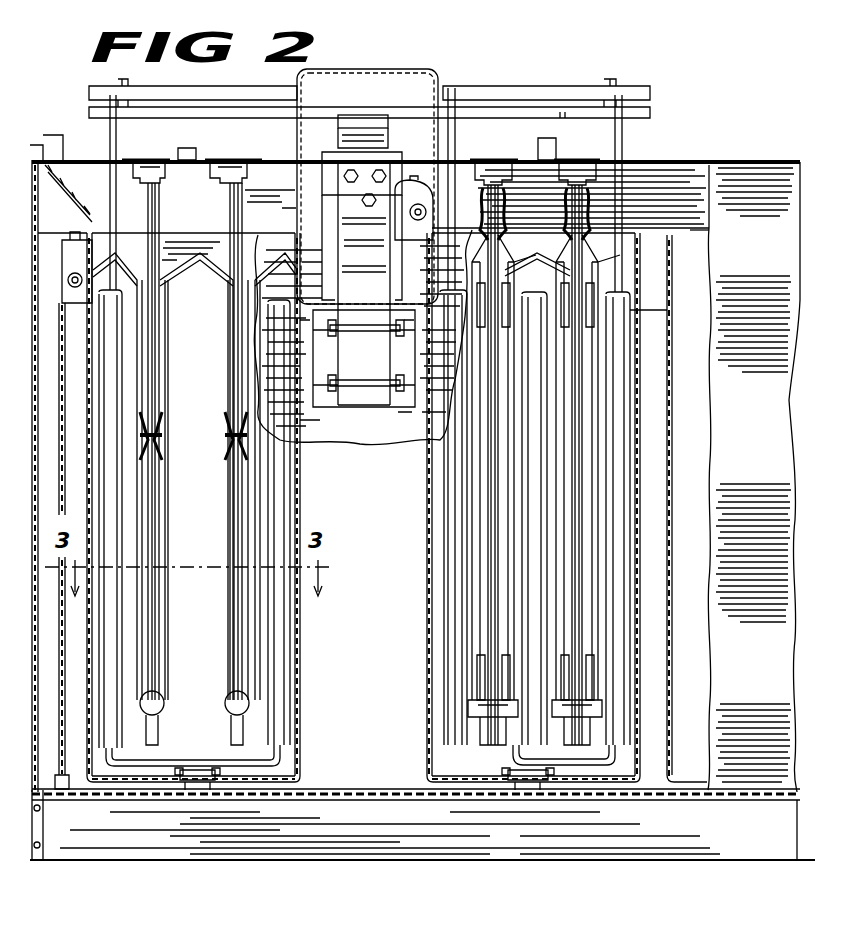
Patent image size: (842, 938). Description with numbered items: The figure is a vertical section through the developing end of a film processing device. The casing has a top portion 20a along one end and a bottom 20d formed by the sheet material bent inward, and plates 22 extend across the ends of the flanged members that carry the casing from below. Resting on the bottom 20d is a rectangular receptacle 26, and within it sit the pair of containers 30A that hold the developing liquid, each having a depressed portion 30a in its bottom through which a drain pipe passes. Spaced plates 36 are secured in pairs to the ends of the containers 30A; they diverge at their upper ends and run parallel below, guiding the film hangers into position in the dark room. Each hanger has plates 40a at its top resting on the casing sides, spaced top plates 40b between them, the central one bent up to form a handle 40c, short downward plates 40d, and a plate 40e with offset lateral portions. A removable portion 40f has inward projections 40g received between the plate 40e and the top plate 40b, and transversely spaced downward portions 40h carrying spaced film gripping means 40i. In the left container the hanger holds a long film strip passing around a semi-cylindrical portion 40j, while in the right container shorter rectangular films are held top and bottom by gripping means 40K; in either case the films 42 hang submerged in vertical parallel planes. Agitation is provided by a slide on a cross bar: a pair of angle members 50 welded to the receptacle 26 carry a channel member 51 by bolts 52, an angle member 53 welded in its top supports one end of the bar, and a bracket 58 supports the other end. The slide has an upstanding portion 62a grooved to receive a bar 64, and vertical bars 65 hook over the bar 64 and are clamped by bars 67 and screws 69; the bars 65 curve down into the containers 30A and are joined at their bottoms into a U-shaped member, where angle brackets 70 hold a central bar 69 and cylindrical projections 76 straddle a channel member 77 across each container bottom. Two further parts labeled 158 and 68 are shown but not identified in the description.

The housing 158 is at (368, 70).
The screws 69 is at (130, 82).
The bars 67 is at (226, 96).
The center post 68 is at (462, 96).
The upstanding portion 62a is at (372, 122).
The angle member 53 is at (388, 160).
The vertically extending bars 65 is at (105, 162).
The bar 64 is at (570, 118).
The plate 40e is at (148, 162).
The inwardly projecting portions 40g is at (200, 156).
The top plates 40b is at (118, 160).
The handle 40c is at (538, 146).
The short plates 40d is at (610, 172).
The plates 40a is at (214, 168).
The removable portion 40f is at (148, 206).
The downwardly extending portions 40h is at (242, 348).
The film gripping means 40i is at (294, 446).
The semi-cylindrical portion 40j is at (270, 722).
The film gripping means 40K is at (470, 672).
The top portion 20a is at (74, 196).
The bottom 20d is at (383, 810).
The plates 22 is at (32, 825).
The receptacle 26 is at (392, 442).
The depressed portion 30a is at (178, 250).
The containers 30A is at (428, 692).
The plates 36 is at (112, 270).
The bracket 58 is at (332, 296).
The bolts 52 is at (358, 386).
The angle members 50 is at (326, 405).
The channel member 51 is at (370, 407).
The films 42 is at (280, 514).
The angle brackets 70 is at (168, 752).
The cylindrical projections 76 is at (248, 770).
The channel member 77 is at (198, 768).